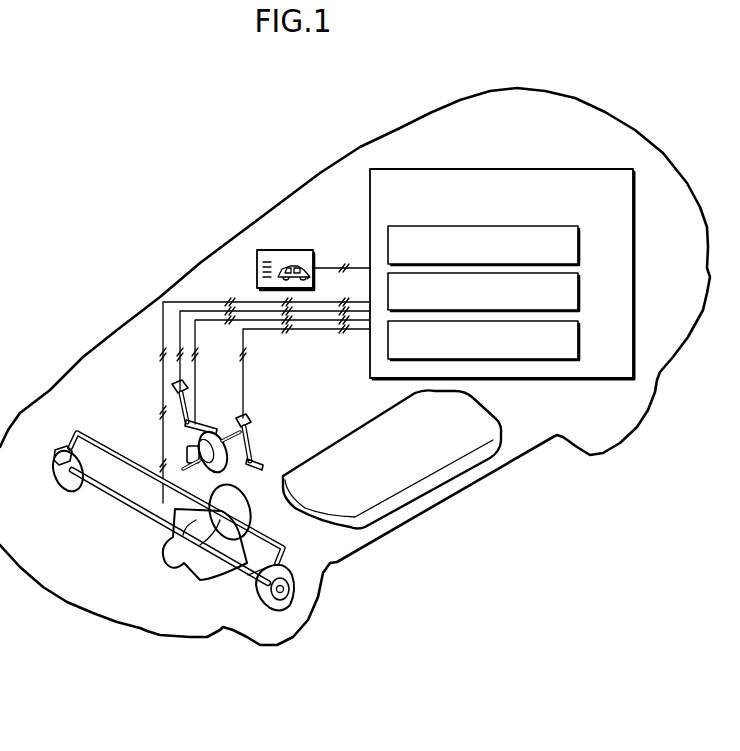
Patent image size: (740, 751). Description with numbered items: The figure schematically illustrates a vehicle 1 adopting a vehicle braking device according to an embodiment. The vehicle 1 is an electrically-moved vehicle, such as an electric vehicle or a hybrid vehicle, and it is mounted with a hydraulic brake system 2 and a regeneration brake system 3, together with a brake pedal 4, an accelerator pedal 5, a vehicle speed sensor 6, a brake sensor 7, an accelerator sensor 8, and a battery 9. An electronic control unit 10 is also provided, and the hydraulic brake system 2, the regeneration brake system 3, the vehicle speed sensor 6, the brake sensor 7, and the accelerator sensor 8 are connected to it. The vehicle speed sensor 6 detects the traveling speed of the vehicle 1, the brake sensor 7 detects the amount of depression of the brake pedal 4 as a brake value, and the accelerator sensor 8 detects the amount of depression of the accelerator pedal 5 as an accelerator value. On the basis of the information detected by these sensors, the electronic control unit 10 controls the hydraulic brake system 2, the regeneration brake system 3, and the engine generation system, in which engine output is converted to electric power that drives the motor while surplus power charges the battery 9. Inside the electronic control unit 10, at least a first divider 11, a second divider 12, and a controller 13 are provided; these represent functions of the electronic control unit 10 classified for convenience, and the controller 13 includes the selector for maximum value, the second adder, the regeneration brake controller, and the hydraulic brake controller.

The vehicle 1 is at (146, 227).
The hydraulic brake system 2 is at (180, 450).
The regeneration brake system 3 is at (140, 488).
The brake pedal 4 is at (261, 458).
The accelerator pedal 5 is at (203, 421).
The vehicle speed sensor 6 is at (257, 270).
The brake sensor 7 is at (250, 420).
The accelerator sensor 8 is at (174, 385).
The battery 9 is at (447, 478).
The electronic control unit 10 is at (502, 252).
The first divider 11 is at (580, 247).
The second divider 12 is at (580, 294).
The controller 13 is at (580, 341).